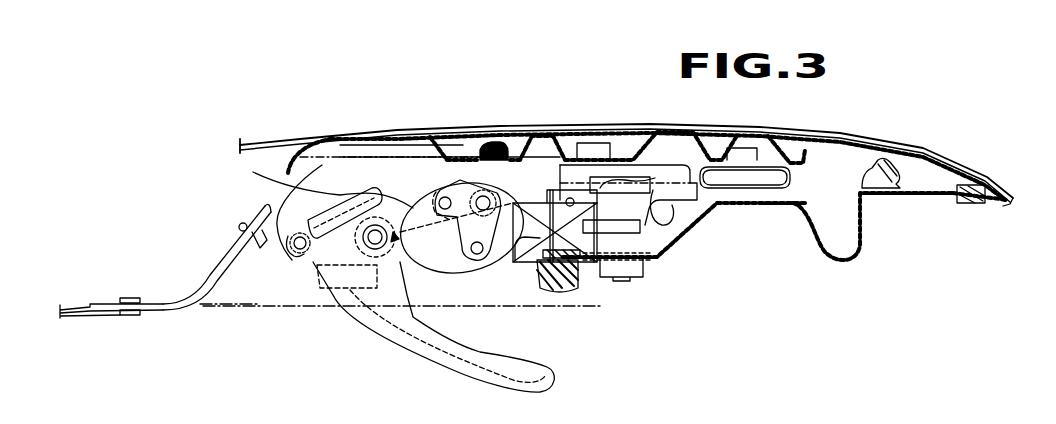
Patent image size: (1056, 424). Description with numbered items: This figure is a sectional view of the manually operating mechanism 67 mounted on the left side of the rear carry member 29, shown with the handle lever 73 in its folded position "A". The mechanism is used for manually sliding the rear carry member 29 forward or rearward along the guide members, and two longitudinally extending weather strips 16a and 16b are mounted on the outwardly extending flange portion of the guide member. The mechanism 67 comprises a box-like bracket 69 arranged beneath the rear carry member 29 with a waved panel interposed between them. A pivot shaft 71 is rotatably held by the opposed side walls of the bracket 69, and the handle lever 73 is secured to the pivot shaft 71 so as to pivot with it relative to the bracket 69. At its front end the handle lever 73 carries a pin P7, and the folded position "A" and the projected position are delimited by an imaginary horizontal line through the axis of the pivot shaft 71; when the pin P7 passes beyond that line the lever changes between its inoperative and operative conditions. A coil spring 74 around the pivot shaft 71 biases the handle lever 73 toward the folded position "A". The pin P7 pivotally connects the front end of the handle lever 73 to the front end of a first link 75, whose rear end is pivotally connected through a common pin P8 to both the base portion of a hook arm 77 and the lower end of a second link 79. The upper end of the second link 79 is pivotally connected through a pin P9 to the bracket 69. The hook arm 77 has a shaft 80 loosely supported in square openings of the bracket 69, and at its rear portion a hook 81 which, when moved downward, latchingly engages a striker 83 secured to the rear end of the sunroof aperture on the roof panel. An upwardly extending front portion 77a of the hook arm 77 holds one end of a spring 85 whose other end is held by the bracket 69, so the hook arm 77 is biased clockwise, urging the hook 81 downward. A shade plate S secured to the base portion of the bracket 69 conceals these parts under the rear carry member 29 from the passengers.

The rear carry member 29 is at (924, 150).
The coil spring 74 is at (283, 181).
The spring 85 is at (479, 188).
The box-like bracket 69 is at (400, 170).
The hook 81 is at (650, 230).
The weather strip 16b is at (888, 192).
The weather strip 16a is at (968, 204).
The shade plate S is at (253, 307).
The handle lever 73 is at (387, 325).
The first link 75 is at (280, 200).
The pin P7 is at (296, 251).
The pivot shaft 71 is at (337, 276).
The manually operating mechanism 67 is at (462, 378).
The folded position A is at (550, 377).
The second link 79 is at (497, 255).
The pin P9 is at (490, 198).
The common pin P8 is at (478, 255).
The front portion 77a is at (445, 212).
The hook arm 77 is at (588, 213).
The shaft 80 is at (588, 245).
The striker 83 is at (608, 214).